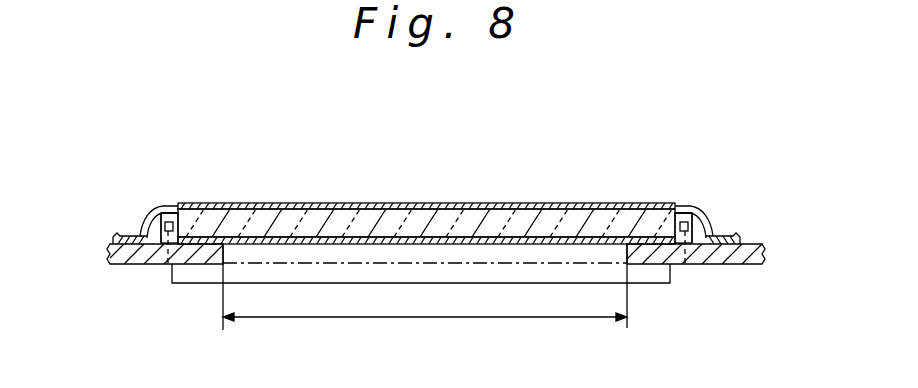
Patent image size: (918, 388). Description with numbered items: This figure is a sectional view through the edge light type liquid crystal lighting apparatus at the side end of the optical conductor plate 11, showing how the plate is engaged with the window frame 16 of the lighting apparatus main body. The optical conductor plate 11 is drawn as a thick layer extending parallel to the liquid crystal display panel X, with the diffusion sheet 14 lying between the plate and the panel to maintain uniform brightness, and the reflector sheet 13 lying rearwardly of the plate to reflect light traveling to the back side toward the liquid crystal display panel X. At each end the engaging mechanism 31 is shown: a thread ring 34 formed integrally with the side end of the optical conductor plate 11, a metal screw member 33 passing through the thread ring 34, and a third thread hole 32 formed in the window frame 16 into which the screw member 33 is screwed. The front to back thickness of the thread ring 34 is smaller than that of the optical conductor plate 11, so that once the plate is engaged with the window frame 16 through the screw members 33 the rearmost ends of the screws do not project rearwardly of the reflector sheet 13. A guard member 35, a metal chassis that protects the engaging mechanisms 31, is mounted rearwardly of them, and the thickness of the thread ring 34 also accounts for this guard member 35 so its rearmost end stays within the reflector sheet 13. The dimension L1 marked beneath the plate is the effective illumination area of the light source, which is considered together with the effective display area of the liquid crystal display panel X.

The optical conductor plate 11 is at (625, 240).
The reflector sheet 13 is at (518, 203).
The diffusion sheet 14 is at (297, 237).
The window frame 16 is at (150, 266).
The engaging mechanism 31 is at (160, 193).
The third thread hole 32 is at (168, 265).
The screw member 33 is at (173, 205).
The thread ring 34 is at (132, 233).
The guard member 35 is at (140, 228).
The liquid crystal display panel X is at (657, 283).
The effective illumination area L1 is at (425, 297).